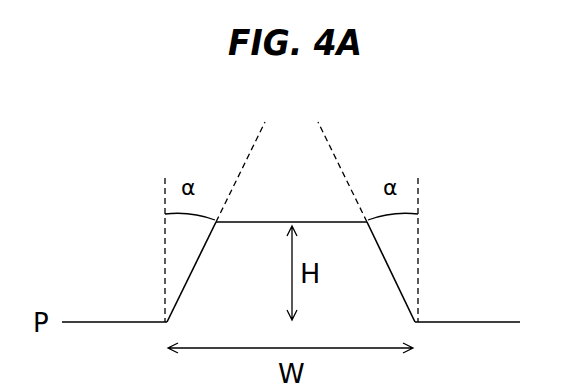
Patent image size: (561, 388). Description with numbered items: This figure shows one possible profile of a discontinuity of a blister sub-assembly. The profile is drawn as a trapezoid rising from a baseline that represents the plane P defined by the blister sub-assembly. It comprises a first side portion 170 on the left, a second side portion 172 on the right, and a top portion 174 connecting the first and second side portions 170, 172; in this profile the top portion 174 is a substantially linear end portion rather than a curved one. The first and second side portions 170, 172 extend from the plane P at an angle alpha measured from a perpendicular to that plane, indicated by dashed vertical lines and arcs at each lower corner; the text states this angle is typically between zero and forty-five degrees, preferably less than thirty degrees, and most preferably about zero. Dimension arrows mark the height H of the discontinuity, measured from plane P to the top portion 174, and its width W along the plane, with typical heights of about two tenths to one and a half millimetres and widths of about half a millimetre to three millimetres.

The first side portion 170 is at (197, 263).
The second side portion 172 is at (387, 263).
The top portion 174 is at (293, 222).